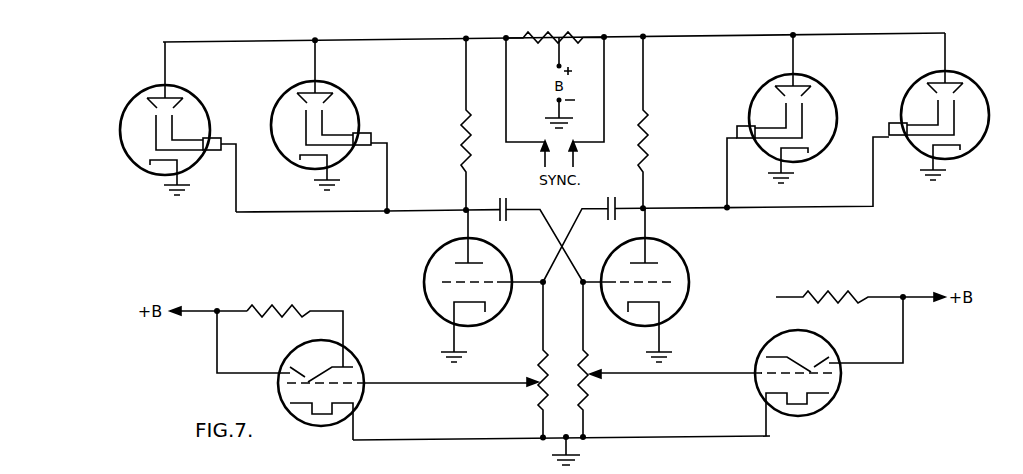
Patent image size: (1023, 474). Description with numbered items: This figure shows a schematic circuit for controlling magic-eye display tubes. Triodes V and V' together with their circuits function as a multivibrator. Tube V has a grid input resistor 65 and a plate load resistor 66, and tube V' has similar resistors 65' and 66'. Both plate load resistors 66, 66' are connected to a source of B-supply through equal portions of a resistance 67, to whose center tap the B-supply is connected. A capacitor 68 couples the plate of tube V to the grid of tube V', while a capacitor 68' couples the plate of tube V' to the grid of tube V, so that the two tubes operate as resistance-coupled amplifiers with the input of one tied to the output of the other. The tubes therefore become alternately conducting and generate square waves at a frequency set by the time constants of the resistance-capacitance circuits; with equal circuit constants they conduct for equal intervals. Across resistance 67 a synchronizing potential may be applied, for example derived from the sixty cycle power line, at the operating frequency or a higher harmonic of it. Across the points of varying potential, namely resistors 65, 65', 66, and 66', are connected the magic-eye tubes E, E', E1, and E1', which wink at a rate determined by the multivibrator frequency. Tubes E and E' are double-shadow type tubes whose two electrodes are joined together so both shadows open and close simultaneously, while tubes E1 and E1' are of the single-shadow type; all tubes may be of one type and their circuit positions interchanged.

The grid input resistor 65 is at (523, 360).
The grid input resistor 65' is at (608, 359).
The plate load resistor 66 is at (445, 125).
The plate load resistor 66' is at (667, 123).
The resistance 67 is at (583, 38).
The capacitor 68 is at (541, 238).
The capacitor 68' is at (579, 238).
The magic-eye tube E is at (196, 127).
The magic-eye tube E' is at (912, 106).
The triode V is at (483, 286).
The triode V' is at (642, 285).
The magic-eye tube E1 is at (408, 390).
The magic-eye tube E1' is at (724, 383).